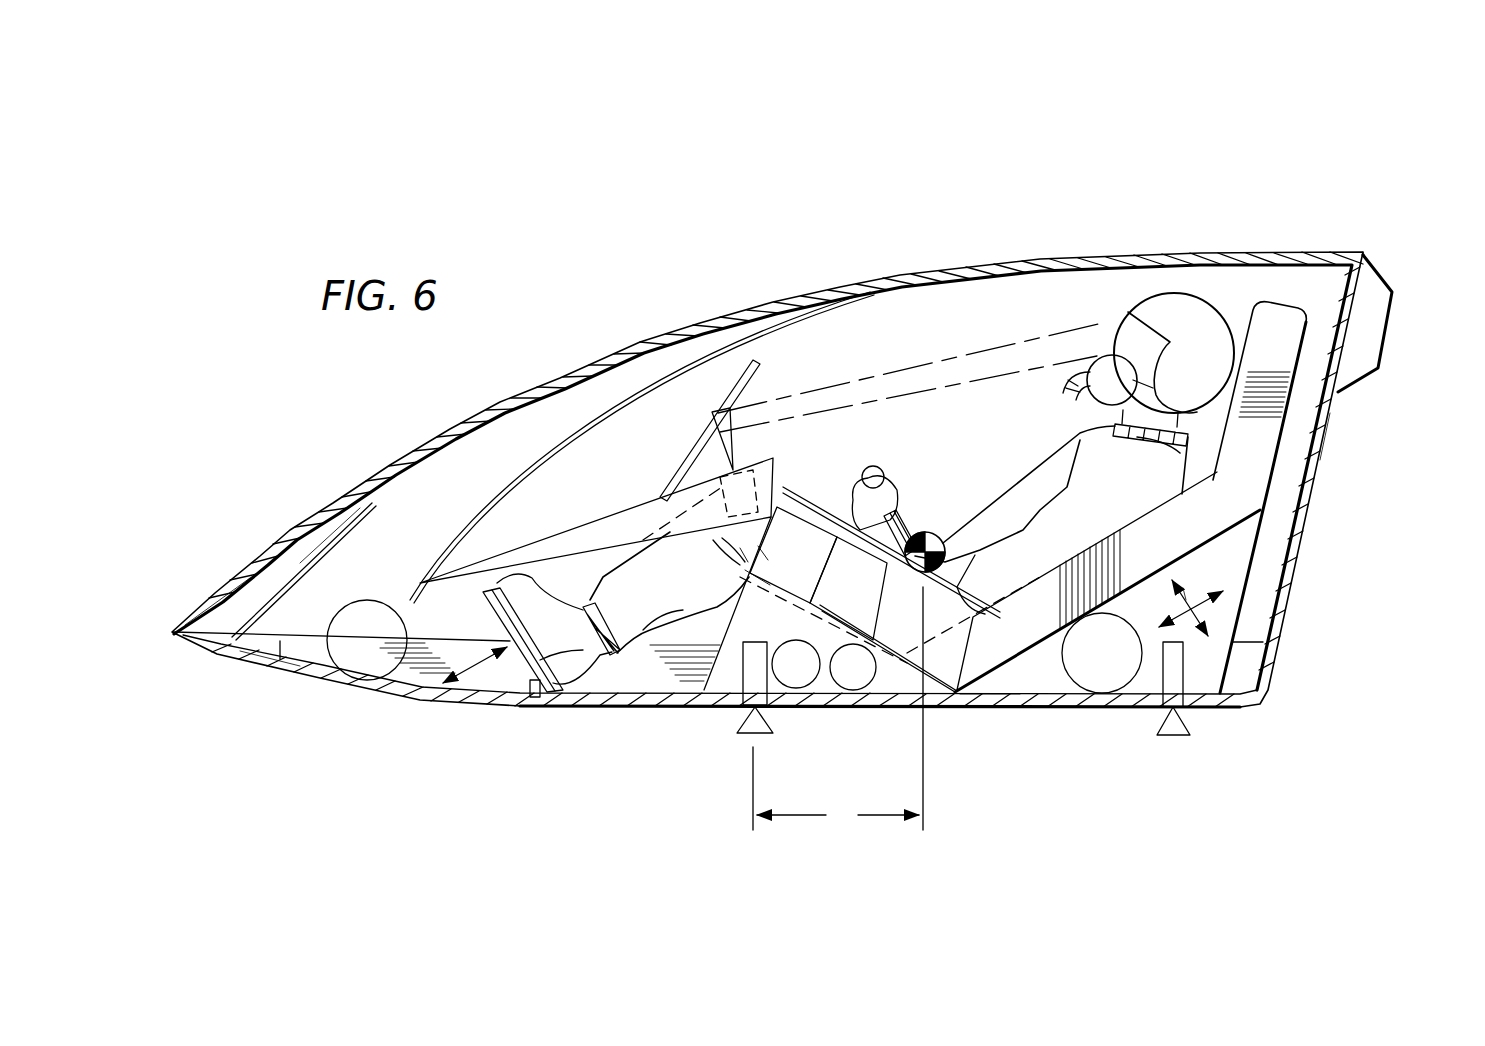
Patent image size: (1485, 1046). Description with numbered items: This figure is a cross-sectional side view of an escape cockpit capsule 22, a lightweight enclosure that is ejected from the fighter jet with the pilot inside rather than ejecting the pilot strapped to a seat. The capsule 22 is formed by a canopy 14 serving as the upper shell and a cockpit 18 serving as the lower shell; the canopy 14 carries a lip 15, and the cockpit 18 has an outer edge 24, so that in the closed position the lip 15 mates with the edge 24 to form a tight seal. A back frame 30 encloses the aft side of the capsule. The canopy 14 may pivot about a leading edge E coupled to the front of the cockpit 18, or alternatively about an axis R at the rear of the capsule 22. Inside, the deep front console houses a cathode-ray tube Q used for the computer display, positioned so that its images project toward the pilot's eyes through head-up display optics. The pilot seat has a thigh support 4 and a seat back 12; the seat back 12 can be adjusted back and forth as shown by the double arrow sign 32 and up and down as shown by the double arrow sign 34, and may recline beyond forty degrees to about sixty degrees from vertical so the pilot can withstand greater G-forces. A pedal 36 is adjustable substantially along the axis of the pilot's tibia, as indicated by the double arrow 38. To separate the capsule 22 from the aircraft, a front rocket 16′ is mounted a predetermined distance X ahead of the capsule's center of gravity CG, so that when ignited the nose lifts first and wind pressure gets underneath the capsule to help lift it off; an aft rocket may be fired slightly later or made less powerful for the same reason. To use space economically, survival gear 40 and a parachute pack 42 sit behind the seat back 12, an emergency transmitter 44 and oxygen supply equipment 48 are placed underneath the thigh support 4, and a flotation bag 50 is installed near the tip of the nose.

The escape cockpit capsule 22 is at (1057, 222).
The cockpit 18 is at (185, 625).
The lip 15 is at (305, 637).
The leading edge E is at (173, 637).
The outer edge 24 is at (270, 667).
The canopy 14 is at (712, 375).
The cathode-ray tube Q is at (743, 493).
The center of gravity CG is at (938, 530).
The seat back 12 is at (1240, 500).
The thigh support 4 is at (817, 665).
The emergency transmitter 44 is at (790, 675).
The oxygen supply equipment 48 is at (857, 673).
The survival gear 40 is at (1103, 680).
The flotation bag 50 is at (357, 657).
The pedal 36 is at (527, 683).
The double arrow 38 is at (480, 668).
The front rocket 16′ is at (750, 737).
The predetermined distance X is at (838, 708).
The double arrow sign 32 is at (1190, 620).
The double arrow sign 34 is at (1183, 588).
The parachute pack 42 is at (1367, 333).
The back frame 30 is at (1330, 413).
The rear pivot axis R is at (1365, 257).